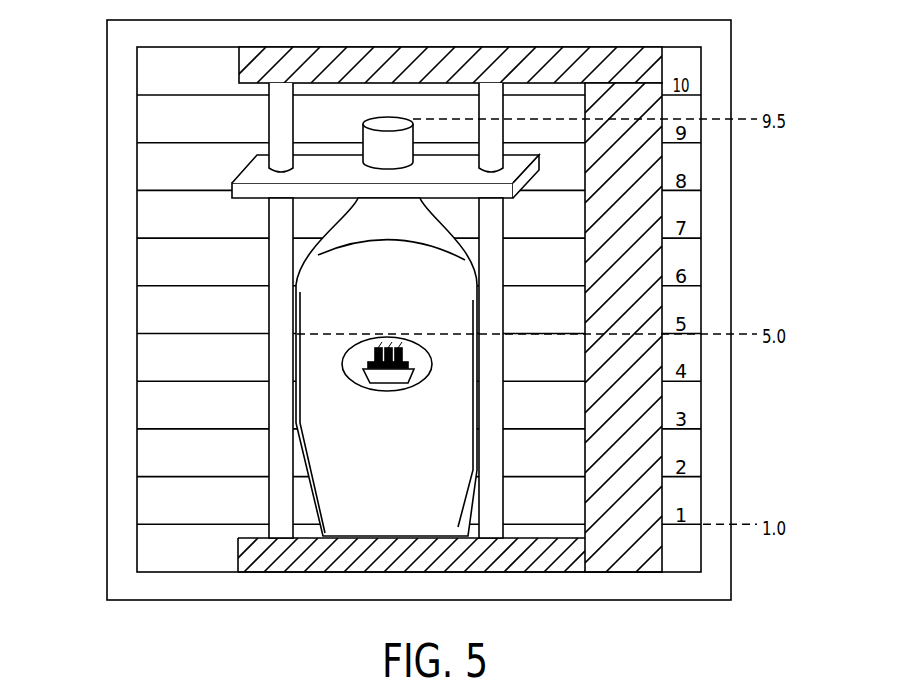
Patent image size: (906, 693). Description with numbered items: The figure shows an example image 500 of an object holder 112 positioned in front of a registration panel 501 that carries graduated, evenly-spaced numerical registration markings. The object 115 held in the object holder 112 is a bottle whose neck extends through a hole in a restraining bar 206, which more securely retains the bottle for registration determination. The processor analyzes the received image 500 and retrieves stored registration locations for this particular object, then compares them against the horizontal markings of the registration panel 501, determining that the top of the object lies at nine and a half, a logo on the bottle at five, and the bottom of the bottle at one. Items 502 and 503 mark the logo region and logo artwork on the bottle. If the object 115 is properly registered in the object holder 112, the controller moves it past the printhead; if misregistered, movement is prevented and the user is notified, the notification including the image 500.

The image 500 is at (106, 72).
The registration panel 501 is at (135, 309).
The restraining bar 206 is at (515, 198).
The product region indicator 502 is at (435, 336).
The product (toy ship) 503 is at (395, 397).
The object 115 is at (332, 488).
The object holder 112 is at (545, 575).